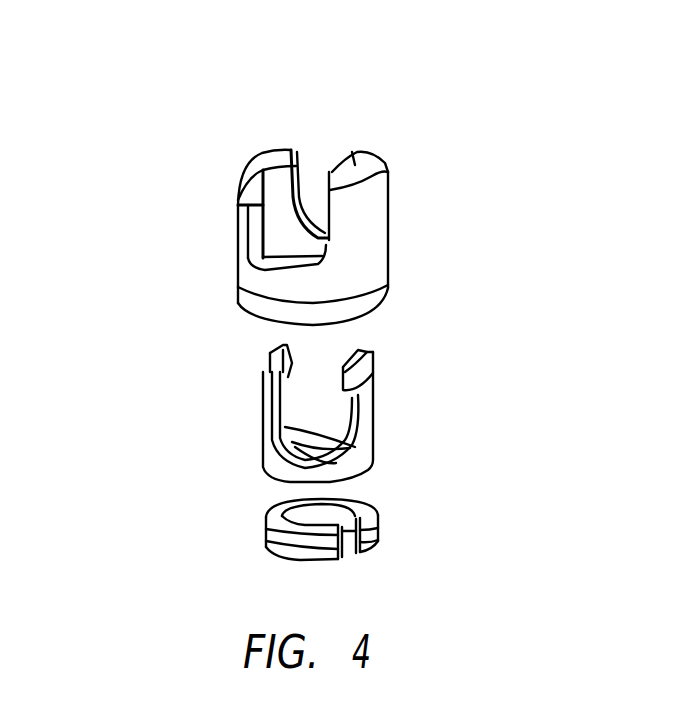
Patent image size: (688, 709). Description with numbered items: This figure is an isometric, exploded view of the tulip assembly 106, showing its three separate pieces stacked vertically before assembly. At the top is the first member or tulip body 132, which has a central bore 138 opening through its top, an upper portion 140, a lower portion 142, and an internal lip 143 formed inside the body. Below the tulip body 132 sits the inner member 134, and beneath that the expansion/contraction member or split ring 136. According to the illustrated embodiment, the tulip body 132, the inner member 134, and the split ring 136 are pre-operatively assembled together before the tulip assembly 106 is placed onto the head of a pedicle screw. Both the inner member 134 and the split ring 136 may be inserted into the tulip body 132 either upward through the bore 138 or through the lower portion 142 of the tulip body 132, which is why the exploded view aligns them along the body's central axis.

The tulip assembly 106 is at (128, 160).
The tulip body 132 is at (388, 233).
The inner member 134 is at (373, 383).
The split ring 136 is at (380, 527).
The central bore 138 is at (338, 126).
The upper portion 140 is at (207, 143).
The lower portion 142 is at (207, 241).
The internal lip 143 is at (280, 175).